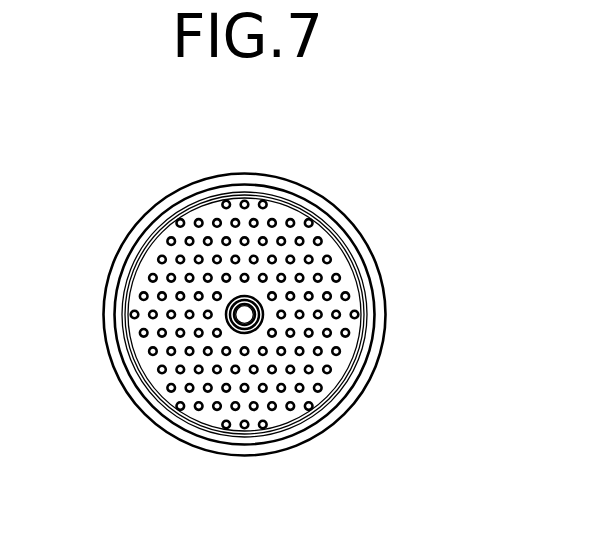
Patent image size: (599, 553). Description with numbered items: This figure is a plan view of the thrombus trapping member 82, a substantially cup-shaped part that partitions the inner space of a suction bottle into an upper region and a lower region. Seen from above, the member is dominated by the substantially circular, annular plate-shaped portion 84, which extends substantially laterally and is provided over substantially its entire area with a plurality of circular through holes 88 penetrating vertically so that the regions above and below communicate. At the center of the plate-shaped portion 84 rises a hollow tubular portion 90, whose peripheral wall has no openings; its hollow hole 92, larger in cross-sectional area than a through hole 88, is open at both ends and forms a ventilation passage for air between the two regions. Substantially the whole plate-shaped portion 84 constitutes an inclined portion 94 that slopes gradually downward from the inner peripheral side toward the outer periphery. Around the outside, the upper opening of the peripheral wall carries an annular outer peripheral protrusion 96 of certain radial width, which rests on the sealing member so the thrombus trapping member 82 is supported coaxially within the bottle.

The thrombus trapping member 82 is at (400, 158).
The plate-shaped portion 84 is at (337, 267).
The through holes 88 is at (204, 241).
The tubular portion 90 is at (244, 296).
The hollow hole 92 is at (243, 317).
The inclined portion 94 is at (142, 368).
The outer peripheral protrusion 96 is at (117, 285).